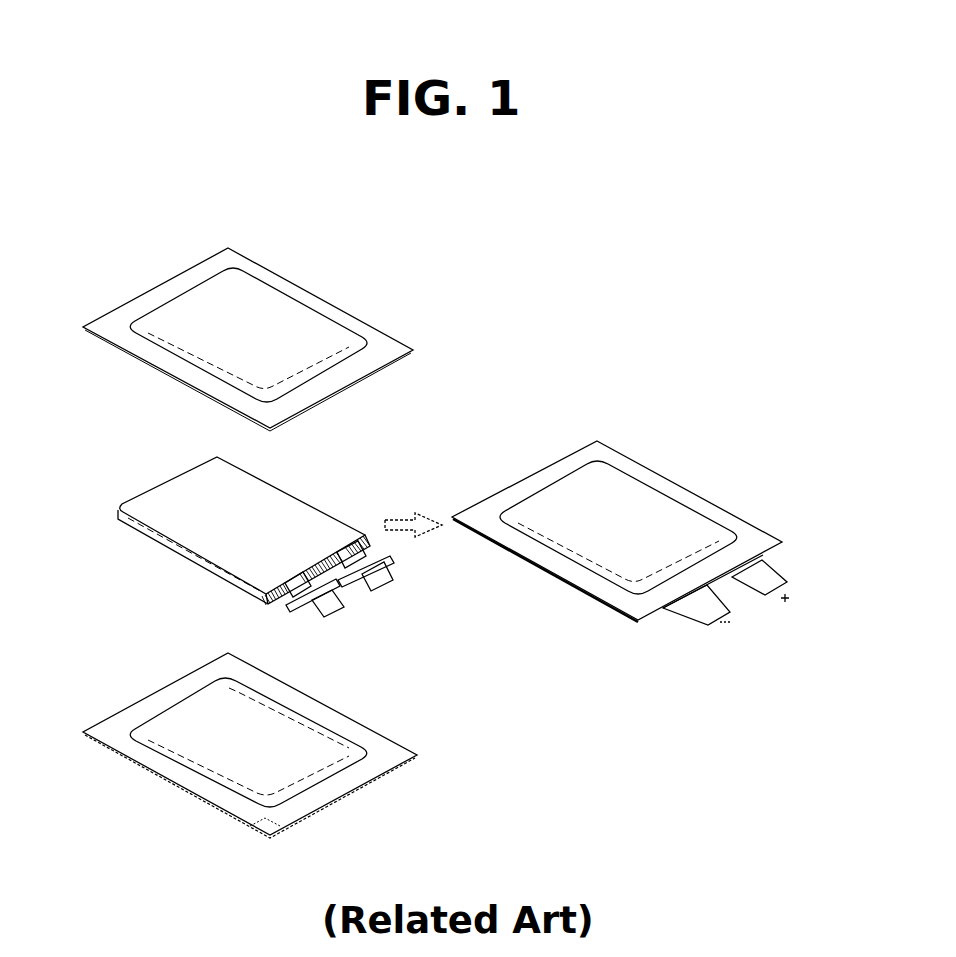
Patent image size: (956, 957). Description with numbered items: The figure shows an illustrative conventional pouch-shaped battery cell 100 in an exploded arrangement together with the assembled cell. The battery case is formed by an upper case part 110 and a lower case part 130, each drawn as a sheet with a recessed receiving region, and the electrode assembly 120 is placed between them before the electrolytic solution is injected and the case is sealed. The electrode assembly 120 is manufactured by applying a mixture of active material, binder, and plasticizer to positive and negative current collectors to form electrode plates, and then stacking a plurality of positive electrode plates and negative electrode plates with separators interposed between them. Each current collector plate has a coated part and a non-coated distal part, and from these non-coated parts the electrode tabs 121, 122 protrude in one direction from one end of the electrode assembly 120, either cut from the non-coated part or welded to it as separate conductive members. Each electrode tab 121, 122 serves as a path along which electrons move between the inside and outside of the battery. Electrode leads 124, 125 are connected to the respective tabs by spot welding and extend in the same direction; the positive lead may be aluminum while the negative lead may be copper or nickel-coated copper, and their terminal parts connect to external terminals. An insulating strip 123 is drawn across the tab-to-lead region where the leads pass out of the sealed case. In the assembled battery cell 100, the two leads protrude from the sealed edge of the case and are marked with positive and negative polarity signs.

The pouch-shaped battery cell 100 is at (672, 472).
The battery case 110 is at (403, 343).
The electrode assembly 120 is at (343, 508).
The electrode tab 121 is at (347, 550).
The electrode tab 122 is at (293, 580).
The insulating film 123 is at (378, 565).
The electrode lead 124 is at (380, 580).
The electrode lead 125 is at (315, 605).
The battery case 130 is at (375, 735).